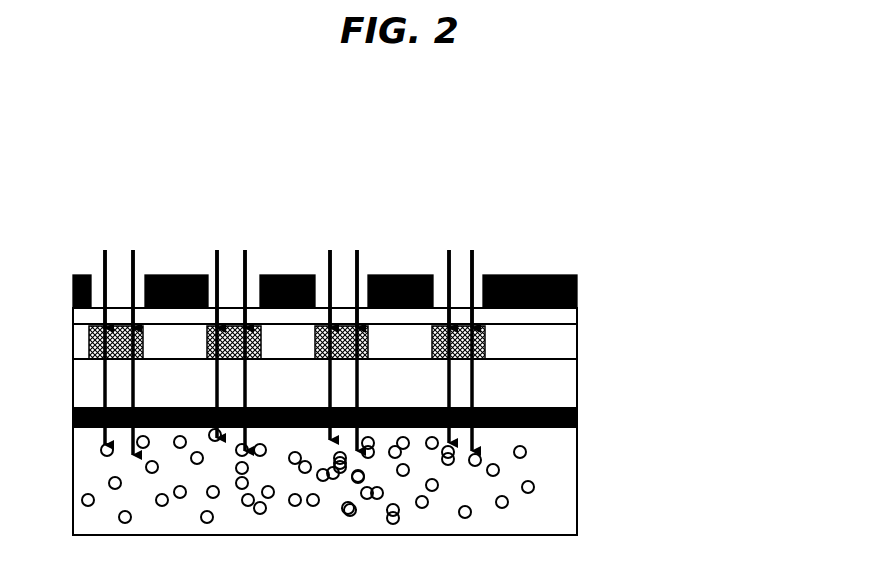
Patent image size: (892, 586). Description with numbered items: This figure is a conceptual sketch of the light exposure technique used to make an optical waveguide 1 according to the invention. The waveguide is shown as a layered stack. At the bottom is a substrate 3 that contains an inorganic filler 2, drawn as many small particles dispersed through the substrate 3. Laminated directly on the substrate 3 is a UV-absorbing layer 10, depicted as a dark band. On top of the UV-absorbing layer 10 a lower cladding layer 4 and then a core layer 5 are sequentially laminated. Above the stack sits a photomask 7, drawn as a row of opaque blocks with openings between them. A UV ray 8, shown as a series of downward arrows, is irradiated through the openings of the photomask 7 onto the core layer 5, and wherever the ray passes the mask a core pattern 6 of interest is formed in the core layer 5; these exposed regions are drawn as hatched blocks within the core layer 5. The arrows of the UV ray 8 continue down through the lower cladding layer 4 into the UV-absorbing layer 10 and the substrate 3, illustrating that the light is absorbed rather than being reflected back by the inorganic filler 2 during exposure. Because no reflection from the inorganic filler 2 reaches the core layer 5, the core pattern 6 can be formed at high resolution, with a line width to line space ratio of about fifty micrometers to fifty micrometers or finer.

The optical waveguide 1 is at (352, 165).
The inorganic filler 2 is at (533, 489).
The substrate 3 is at (557, 473).
The lower cladding layer 4 is at (557, 388).
The core layer 5 is at (557, 338).
The core pattern 6 is at (485, 348).
The photomask 7 is at (558, 275).
The UV ray 8 is at (288, 332).
The UV-absorbing layer 10 is at (577, 422).